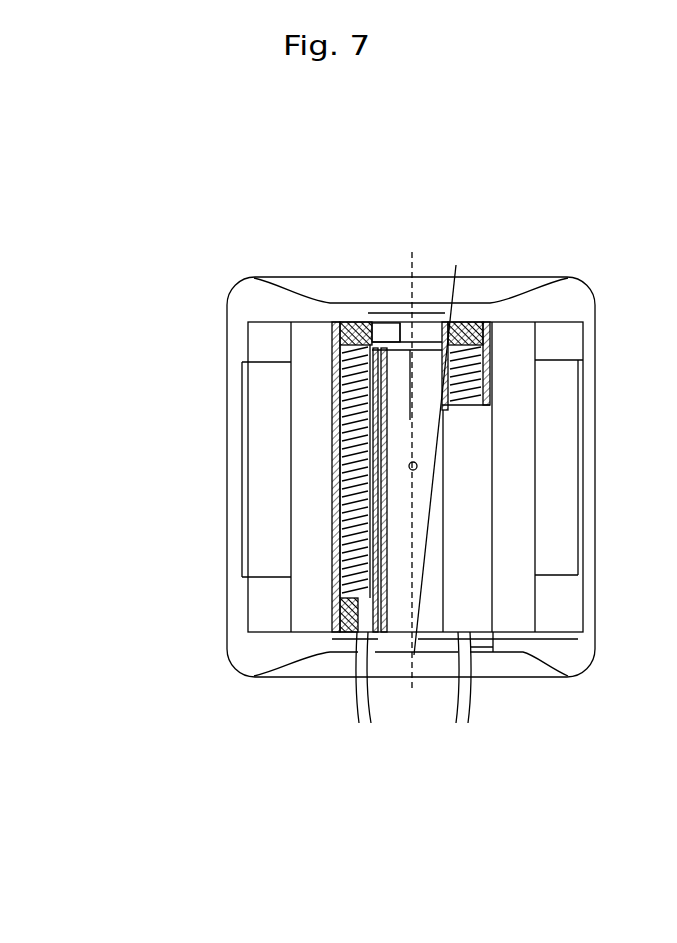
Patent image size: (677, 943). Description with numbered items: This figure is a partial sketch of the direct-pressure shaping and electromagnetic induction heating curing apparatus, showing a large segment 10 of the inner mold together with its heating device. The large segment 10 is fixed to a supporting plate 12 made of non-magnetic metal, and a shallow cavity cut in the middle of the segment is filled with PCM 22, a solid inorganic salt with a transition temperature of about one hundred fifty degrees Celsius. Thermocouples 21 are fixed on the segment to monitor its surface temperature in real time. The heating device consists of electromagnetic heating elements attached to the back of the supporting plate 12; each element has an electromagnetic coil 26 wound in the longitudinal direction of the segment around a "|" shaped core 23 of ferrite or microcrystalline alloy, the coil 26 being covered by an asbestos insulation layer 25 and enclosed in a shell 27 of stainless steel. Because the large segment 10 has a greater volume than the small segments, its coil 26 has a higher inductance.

The large segment 10 is at (552, 590).
The supporting plate 12 is at (313, 375).
The thermocouple 21 is at (413, 307).
The PCM 22 is at (262, 385).
The "|" shaped core 23 is at (366, 320).
The insulation layer 25 is at (338, 330).
The electromagnetic coil 26 is at (340, 525).
The shell 27 is at (352, 638).